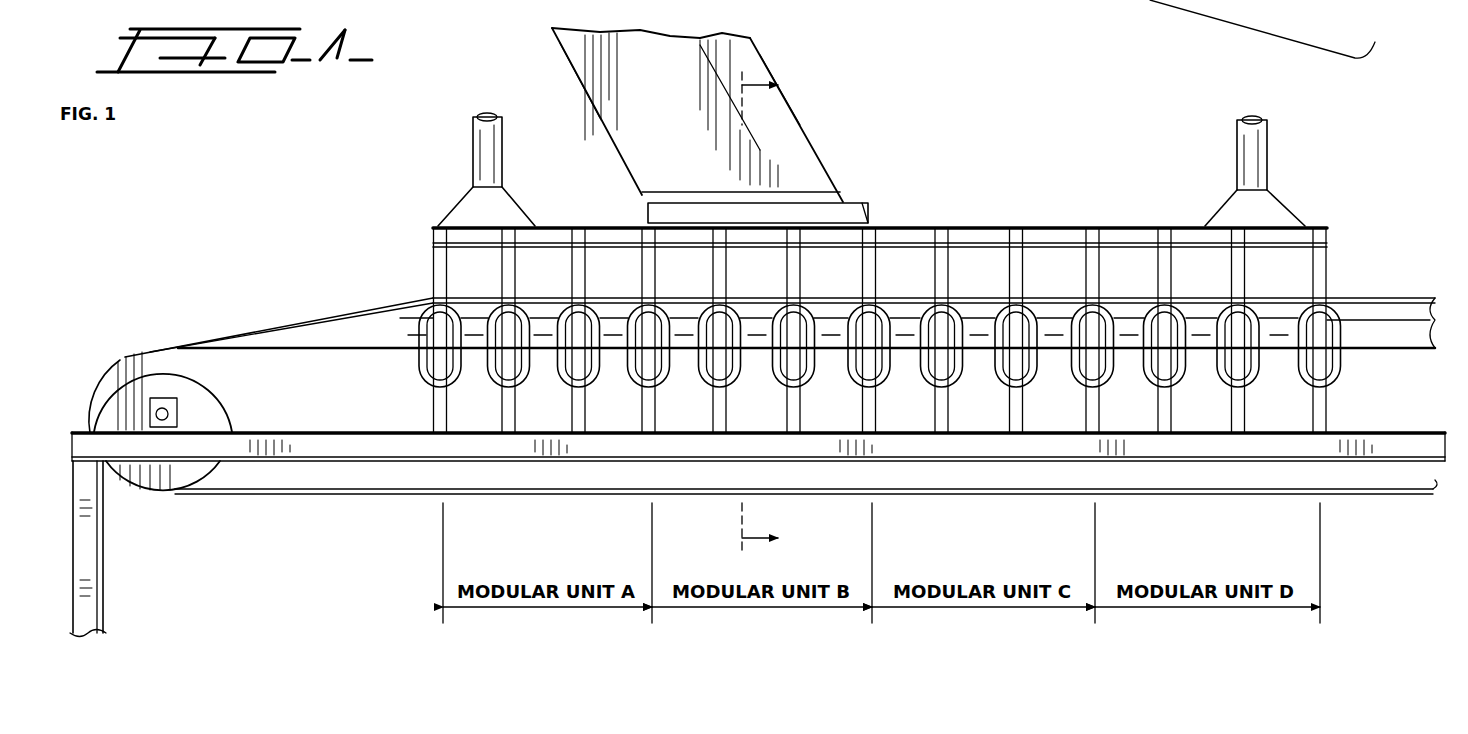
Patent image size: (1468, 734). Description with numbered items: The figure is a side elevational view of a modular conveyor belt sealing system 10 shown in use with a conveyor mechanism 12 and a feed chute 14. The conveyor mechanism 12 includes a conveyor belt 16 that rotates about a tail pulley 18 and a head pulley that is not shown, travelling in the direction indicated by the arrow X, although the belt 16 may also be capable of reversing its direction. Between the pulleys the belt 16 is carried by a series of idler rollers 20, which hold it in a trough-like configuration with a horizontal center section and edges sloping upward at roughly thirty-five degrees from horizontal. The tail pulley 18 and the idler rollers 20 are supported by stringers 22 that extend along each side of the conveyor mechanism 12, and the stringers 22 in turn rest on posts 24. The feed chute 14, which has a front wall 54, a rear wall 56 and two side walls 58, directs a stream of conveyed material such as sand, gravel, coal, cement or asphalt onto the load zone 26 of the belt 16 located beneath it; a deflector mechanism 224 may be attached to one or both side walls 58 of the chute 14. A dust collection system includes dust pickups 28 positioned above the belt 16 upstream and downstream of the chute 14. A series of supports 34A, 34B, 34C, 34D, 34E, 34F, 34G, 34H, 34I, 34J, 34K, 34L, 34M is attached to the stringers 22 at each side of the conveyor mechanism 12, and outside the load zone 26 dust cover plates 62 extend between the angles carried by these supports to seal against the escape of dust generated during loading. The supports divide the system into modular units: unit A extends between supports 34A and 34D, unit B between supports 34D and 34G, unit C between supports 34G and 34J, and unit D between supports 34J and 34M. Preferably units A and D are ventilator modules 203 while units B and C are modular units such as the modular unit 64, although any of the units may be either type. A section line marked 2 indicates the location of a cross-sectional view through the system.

The modular conveyor belt sealing system 10 is at (950, 160).
The conveyor mechanism 12 is at (152, 322).
The feed chute 14 is at (622, 26).
The conveyor belt 16 is at (283, 320).
The tail pulley 18 is at (227, 378).
The idler rollers 20 is at (432, 387).
The stringers 22 is at (272, 428).
The posts 24 is at (105, 548).
The load zone 26 is at (764, 250).
The dust pickups 28 is at (455, 205).
The front wall 54 is at (788, 100).
The rear wall 56 is at (583, 78).
The side walls 58 is at (790, 135).
The dust cover plates 62 is at (548, 226).
The modular unit 64 is at (848, 265).
The modular ventilator unit 203 is at (466, 270).
The deflector mechanism 224 is at (878, 208).
The section line 2 is at (748, 313).
The support 34A is at (407, 369).
The support 34B is at (474, 369).
The support 34C is at (544, 369).
The support 34D is at (614, 369).
The support 34E is at (683, 369).
The support 34F is at (755, 369).
The support 34G is at (831, 369).
The support 34H is at (905, 369).
The support 34I is at (978, 369).
The support 34J is at (1054, 369).
The support 34K is at (1129, 369).
The support 34L is at (1201, 369).
The support 34M is at (1279, 369).